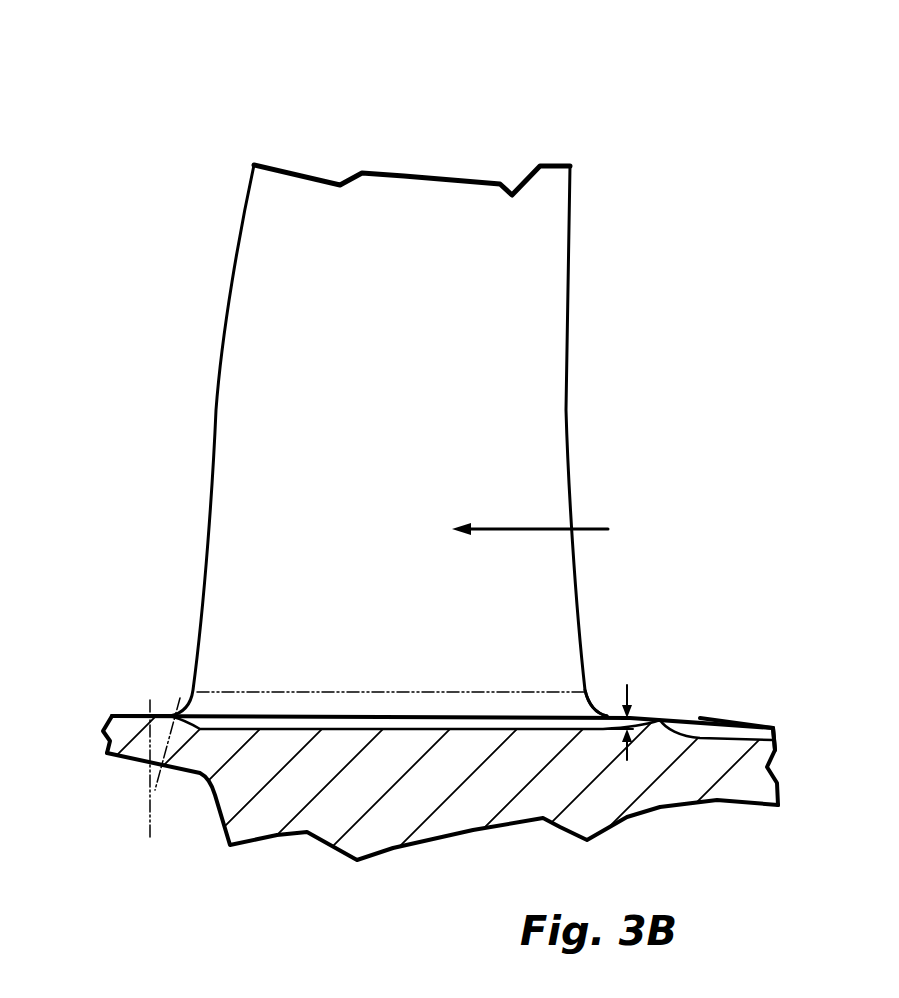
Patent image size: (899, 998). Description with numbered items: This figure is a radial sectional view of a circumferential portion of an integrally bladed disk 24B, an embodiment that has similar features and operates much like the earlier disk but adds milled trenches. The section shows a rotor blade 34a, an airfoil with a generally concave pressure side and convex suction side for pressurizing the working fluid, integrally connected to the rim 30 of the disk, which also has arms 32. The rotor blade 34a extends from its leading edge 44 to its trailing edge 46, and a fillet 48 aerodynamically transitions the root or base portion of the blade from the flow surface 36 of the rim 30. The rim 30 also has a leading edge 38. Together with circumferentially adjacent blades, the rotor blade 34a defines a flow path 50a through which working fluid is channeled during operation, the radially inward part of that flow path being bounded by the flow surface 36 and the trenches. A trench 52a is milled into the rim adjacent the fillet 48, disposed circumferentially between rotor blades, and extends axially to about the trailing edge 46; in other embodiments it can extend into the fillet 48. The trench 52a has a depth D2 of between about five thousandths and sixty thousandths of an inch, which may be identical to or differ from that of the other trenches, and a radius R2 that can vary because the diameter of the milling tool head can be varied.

The integrally bladed disk 24B is at (155, 138).
The rim 30 is at (373, 820).
The arms 32 is at (747, 732).
The rotor blade 34a is at (403, 175).
The flow surface 36 is at (123, 716).
The leading edge 38 is at (661, 718).
The leading edge 44 is at (570, 463).
The trailing edge 46 is at (213, 478).
The fillet 48 is at (585, 712).
The flow path 50a is at (597, 527).
The trench 52a is at (612, 706).
The depth D2 is at (625, 743).
The radius R2 is at (160, 730).